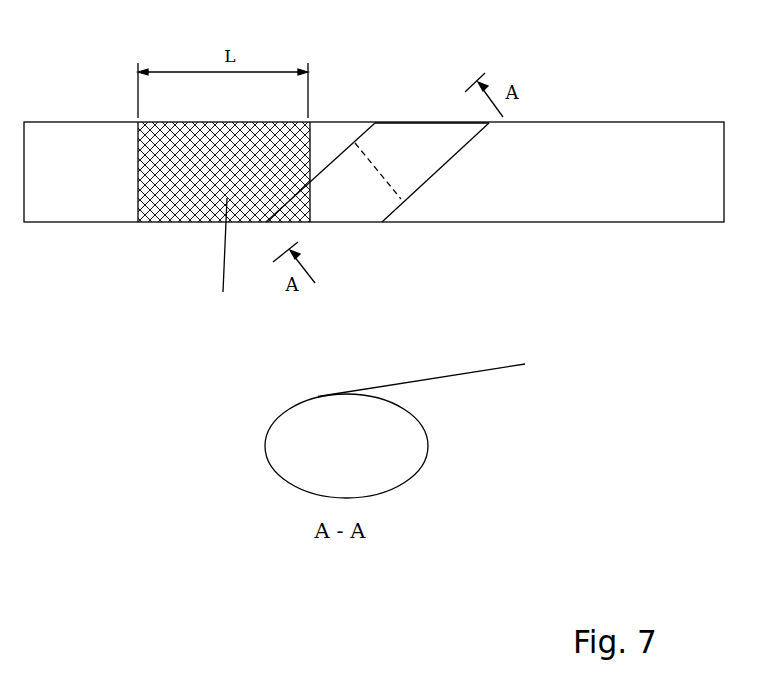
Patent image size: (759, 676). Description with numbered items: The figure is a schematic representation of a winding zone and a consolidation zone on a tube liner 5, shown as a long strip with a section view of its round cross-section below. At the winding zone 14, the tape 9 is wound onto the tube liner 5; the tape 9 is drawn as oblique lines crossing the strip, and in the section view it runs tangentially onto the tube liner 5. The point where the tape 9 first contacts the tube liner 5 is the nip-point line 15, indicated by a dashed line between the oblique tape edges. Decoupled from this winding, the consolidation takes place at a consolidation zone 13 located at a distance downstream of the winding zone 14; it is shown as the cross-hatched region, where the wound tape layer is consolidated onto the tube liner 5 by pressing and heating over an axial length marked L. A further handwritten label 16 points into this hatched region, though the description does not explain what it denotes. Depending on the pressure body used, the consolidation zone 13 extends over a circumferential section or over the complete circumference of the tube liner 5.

The tube liner 5 is at (572, 190).
The tape 9 is at (435, 157).
The consolidation zone 13 is at (177, 228).
The winding zone 14 is at (385, 105).
The nip-point line 15 is at (384, 173).
The structured surface region 16 is at (240, 302).